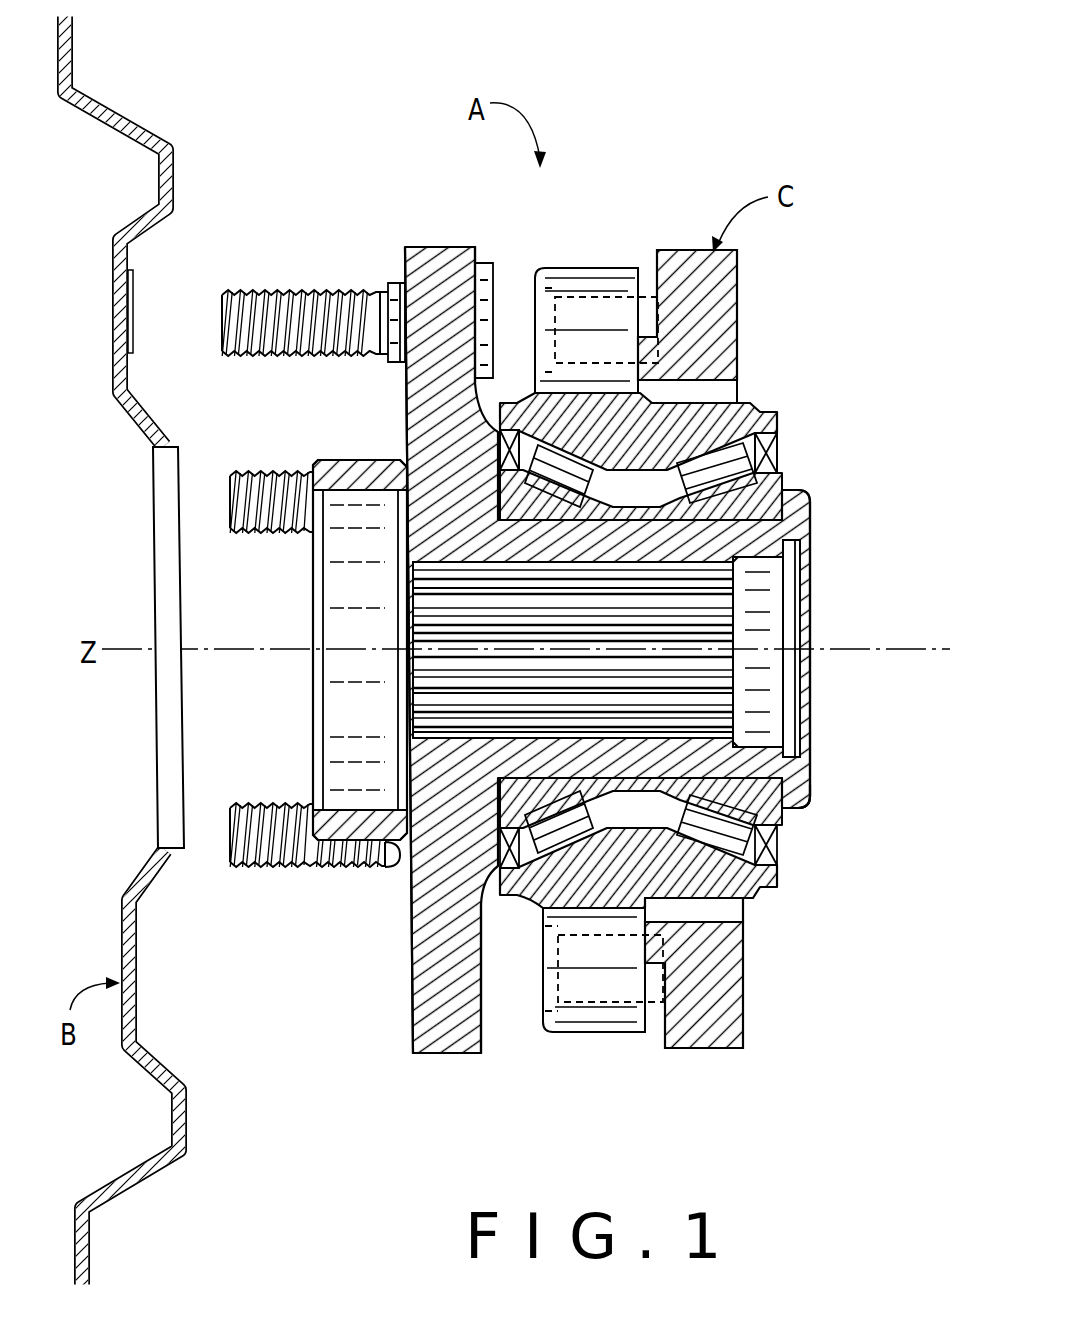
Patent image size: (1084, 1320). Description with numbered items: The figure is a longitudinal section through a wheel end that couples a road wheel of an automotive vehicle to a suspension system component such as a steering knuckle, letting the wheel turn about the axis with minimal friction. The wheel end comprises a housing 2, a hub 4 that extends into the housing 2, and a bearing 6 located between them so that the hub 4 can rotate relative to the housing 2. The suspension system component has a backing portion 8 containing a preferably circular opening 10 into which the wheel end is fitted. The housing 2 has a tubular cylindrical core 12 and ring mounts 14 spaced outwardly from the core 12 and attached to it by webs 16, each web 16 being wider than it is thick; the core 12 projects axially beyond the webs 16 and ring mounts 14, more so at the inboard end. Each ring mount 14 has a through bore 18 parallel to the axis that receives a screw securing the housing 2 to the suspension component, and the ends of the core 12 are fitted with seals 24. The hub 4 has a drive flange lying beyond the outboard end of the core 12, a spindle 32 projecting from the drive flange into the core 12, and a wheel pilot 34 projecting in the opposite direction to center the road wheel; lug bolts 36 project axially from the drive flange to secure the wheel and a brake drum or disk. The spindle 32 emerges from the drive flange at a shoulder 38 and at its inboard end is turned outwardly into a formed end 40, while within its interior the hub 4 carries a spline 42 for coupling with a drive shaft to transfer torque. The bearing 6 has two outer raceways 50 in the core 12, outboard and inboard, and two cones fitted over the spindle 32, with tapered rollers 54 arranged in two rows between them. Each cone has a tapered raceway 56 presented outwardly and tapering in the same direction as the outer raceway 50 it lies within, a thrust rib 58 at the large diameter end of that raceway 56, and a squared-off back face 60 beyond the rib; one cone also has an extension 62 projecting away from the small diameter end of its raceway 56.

The housing 2 is at (517, 393).
The hub 4 is at (302, 681).
The bearing 6 is at (785, 765).
The backing portion 8 is at (712, 1048).
The opening 10 is at (745, 910).
The cylindrical core 12 is at (413, 997).
The ring mount 14 is at (595, 268).
The web 16 is at (717, 393).
The through bore 18 is at (612, 300).
The seal 24 is at (778, 437).
The spindle 32 is at (768, 663).
The wheel pilot 34 is at (330, 460).
The lug bolt 36 is at (305, 288).
The shoulder 38 is at (540, 770).
The formed end 40 is at (812, 797).
The spline 42 is at (692, 611).
The outer raceway 50 is at (485, 562).
The tapered roller 54 is at (780, 820).
The tapered raceway 56 is at (500, 432).
The thrust rib 58 is at (530, 455).
The back face 60 is at (575, 505).
The extension 62 is at (733, 558).